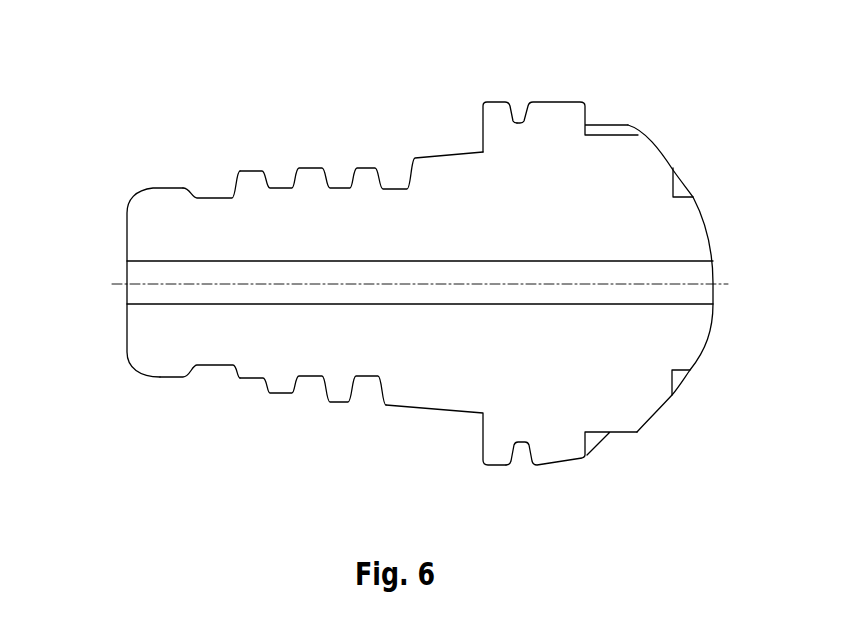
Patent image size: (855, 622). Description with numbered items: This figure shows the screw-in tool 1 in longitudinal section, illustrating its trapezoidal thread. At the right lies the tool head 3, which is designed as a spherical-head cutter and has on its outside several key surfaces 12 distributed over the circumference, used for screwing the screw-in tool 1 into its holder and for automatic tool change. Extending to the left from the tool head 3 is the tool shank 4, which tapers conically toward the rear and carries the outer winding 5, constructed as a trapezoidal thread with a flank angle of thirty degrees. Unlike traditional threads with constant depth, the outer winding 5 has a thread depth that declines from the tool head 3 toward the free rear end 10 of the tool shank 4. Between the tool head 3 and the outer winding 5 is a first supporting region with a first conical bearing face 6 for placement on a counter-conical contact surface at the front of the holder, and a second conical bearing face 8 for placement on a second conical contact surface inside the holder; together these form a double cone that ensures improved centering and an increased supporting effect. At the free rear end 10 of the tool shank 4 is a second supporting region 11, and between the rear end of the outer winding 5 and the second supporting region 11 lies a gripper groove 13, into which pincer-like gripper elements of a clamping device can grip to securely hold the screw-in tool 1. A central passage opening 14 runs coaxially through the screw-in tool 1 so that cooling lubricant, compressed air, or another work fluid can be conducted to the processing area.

The screw-in tool 1 is at (687, 124).
The tool head 3 is at (658, 337).
The tool shank 4 is at (320, 233).
The outer winding 5 is at (340, 402).
The first conical bearing face 6 is at (485, 120).
The second conical bearing face 8 is at (433, 410).
The free rear end 10 is at (127, 217).
The second supporting region 11 is at (160, 378).
The key surfaces 12 is at (522, 122).
The gripper groove 13 is at (211, 198).
The central passage opening 14 is at (153, 292).